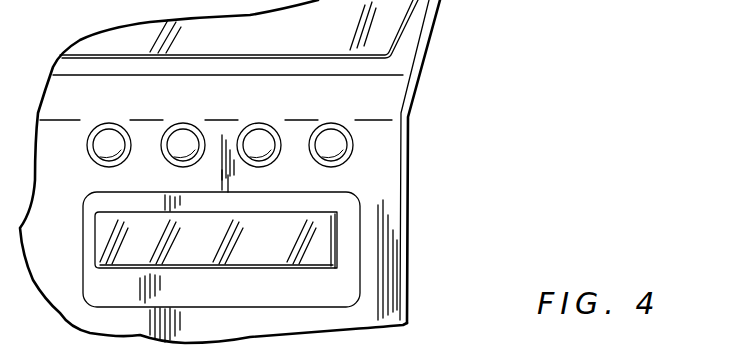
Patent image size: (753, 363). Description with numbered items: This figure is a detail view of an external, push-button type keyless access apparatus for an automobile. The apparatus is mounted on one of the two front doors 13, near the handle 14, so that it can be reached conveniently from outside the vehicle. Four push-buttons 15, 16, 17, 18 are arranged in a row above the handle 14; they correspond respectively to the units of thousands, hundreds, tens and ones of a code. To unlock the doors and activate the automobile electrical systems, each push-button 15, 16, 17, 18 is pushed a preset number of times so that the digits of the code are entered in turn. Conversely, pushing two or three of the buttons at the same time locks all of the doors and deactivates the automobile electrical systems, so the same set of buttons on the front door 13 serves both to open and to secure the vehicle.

The front door 13 is at (383, 105).
The handle 14 is at (360, 255).
The push-button 15 is at (108, 135).
The push-button 16 is at (185, 135).
The push-button 17 is at (263, 135).
The push-button 18 is at (333, 135).